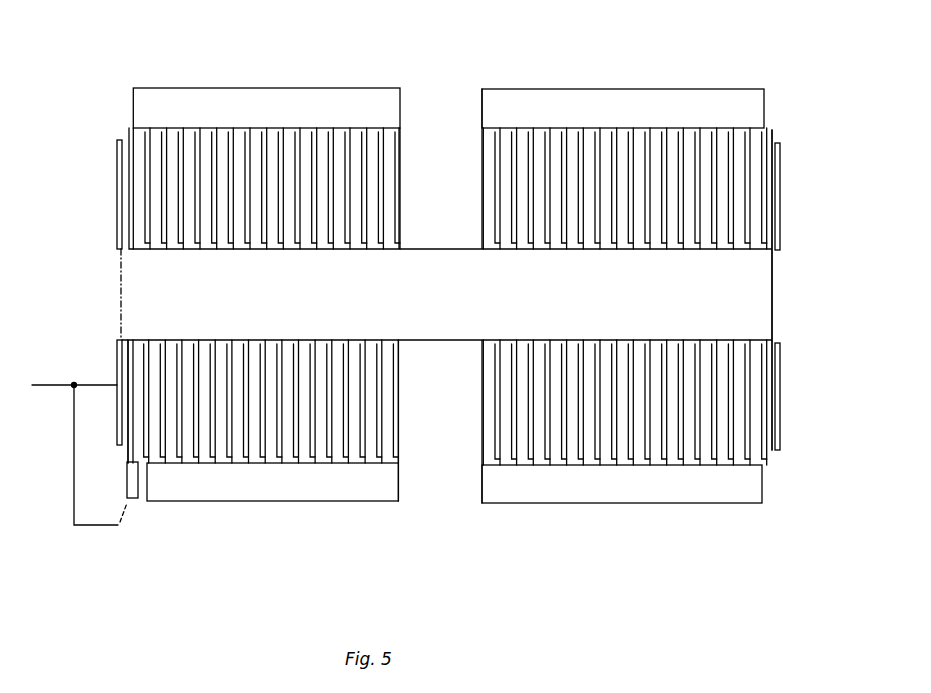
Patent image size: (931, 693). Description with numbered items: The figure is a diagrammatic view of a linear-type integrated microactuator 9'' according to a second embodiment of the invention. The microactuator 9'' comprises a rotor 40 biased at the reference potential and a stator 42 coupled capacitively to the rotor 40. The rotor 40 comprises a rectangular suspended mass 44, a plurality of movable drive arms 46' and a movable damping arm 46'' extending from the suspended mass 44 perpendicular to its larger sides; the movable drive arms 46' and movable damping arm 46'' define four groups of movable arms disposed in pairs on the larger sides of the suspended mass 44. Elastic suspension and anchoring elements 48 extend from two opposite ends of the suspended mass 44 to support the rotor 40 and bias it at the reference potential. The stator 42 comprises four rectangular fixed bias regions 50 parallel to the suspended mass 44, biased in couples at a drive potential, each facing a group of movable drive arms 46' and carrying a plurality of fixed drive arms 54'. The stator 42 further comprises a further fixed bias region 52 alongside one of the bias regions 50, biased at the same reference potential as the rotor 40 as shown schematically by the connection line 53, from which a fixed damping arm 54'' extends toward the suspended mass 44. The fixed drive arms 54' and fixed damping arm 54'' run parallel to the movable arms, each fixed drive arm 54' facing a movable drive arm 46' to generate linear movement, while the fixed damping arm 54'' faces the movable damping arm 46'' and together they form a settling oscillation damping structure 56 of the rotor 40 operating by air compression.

The stator 42 is at (148, 82).
The fixed bias region 50 is at (259, 98).
The movable drive arm 46' is at (479, 299).
The fixed drive arm 54' is at (483, 353).
The elastic suspension and anchoring element 48 is at (115, 225).
The suspended mass 44 is at (770, 308).
The connection line 53 is at (62, 383).
The further fixed bias region 52 is at (131, 490).
The settling oscillation damping structure 56 is at (128, 410).
The fixed damping arm 54'' is at (193, 461).
The movable damping arm 46'' is at (158, 383).
The microactuator 9'' is at (309, 543).
The rotor 40 is at (462, 375).